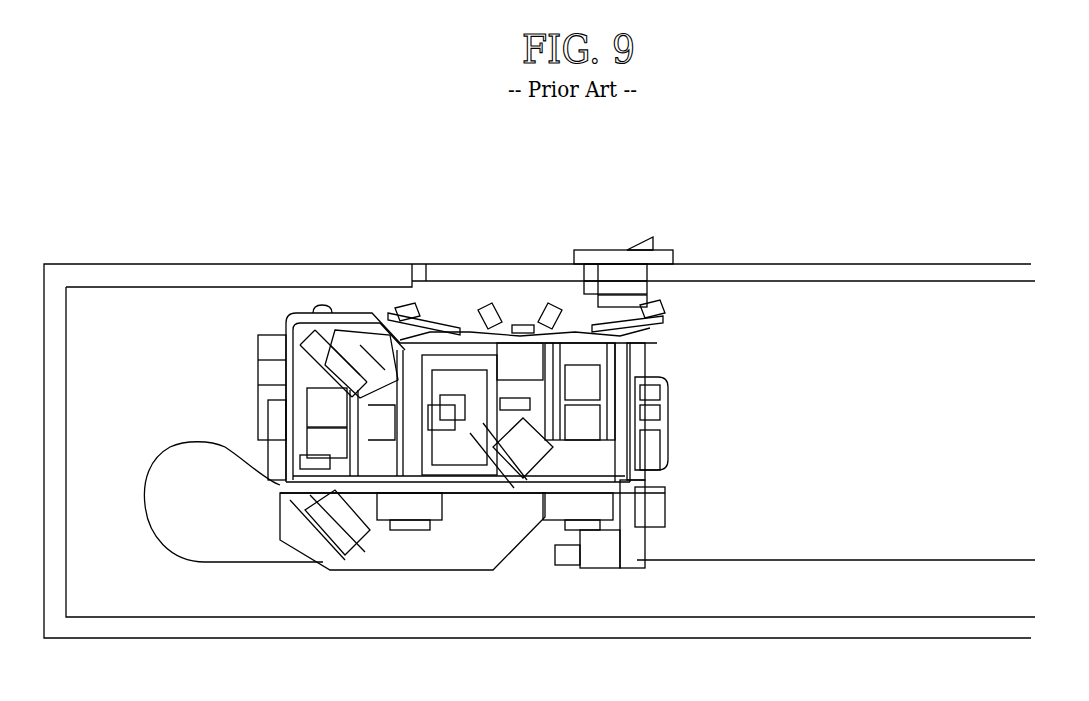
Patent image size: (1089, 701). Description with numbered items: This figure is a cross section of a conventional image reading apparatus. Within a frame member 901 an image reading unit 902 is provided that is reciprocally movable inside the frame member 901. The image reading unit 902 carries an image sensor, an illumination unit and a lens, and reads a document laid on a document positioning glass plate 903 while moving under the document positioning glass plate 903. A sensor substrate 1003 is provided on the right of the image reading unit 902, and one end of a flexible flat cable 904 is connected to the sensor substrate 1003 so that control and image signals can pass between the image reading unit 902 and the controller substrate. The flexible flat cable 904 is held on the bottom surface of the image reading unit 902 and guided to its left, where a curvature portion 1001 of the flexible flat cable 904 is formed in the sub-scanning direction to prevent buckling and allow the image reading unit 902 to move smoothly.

The frame member 901 is at (218, 264).
The image reading unit 902 is at (460, 290).
The document positioning glass plate 903 is at (857, 264).
The flexible flat cable 904 is at (838, 560).
The curvature portion 1001 is at (178, 442).
The sensor substrate 1003 is at (668, 416).